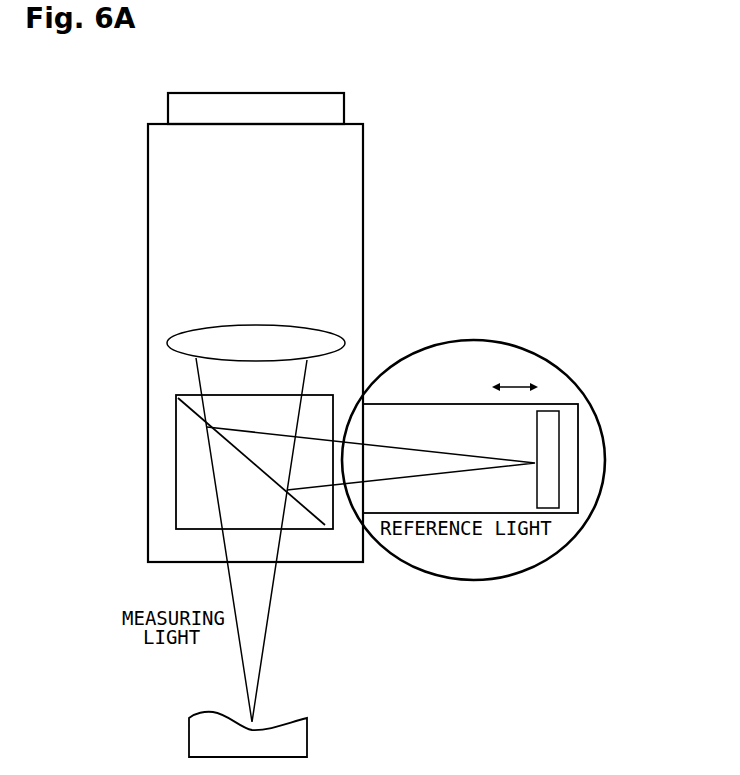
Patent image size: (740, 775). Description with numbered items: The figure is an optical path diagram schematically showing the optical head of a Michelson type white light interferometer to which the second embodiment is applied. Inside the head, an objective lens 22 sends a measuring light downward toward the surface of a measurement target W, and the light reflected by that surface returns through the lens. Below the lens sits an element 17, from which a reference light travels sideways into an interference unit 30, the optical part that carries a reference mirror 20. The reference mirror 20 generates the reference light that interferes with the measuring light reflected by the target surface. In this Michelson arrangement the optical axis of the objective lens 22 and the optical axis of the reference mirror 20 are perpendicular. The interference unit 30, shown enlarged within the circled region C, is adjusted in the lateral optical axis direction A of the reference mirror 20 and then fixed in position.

The objective lens 22 is at (178, 333).
The beam splitter 17 is at (176, 467).
The interference unit 30 is at (408, 403).
The reference mirror 20 is at (537, 496).
The enlarged portion C is at (473, 442).
The optical axis direction A is at (515, 378).
The workpiece W is at (307, 737).